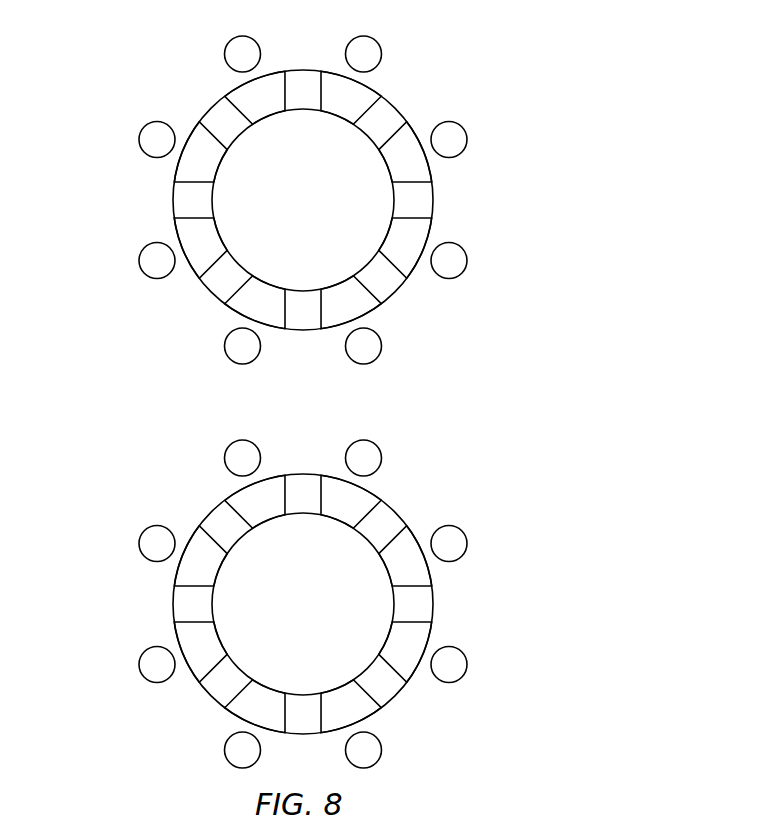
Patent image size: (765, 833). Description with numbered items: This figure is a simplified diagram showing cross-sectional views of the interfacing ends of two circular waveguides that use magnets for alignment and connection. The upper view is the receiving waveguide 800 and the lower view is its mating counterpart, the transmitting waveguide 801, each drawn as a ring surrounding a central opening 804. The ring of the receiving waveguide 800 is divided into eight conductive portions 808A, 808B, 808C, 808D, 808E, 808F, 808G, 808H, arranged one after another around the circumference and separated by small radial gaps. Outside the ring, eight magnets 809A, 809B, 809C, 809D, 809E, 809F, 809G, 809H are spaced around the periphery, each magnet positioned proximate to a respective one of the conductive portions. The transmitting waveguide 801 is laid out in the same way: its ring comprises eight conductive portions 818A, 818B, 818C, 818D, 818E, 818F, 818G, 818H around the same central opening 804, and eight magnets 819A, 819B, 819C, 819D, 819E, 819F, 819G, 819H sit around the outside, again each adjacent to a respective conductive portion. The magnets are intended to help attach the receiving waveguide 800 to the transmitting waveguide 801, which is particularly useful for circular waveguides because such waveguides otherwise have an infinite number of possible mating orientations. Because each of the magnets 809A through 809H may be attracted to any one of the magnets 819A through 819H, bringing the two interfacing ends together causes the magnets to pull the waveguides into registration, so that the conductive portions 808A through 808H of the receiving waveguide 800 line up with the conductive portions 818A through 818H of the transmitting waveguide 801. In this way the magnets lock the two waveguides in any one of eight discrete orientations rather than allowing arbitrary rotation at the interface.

The receiving waveguide 800 is at (126, 76).
The second ring assembly 801 is at (234, 585).
The central body 804 is at (323, 210).
The ring segment A 808A is at (363, 92).
The ring segment B 808B is at (417, 165).
The ring segment C 808C is at (412, 235).
The ring segment D 808D is at (360, 302).
The ring segment E 808E is at (270, 315).
The ring segment F 808F is at (200, 260).
The ring segment G 808G is at (192, 168).
The ring segment H 808H is at (250, 100).
The magnet 809A is at (365, 50).
The magnet 809B is at (455, 137).
The magnet 809C is at (453, 265).
The magnet 809D is at (367, 352).
The magnet 809E is at (240, 347).
The magnet 809F is at (152, 262).
The magnet 809G is at (153, 133).
The magnet 809H is at (242, 48).
The ring segment A 818A is at (393, 495).
The ring segment B 818B is at (444, 566).
The ring segment C 818C is at (451, 648).
The ring segment D 818D is at (384, 710).
The ring segment E 818E is at (287, 728).
The ring segment F 818F is at (172, 656).
The ring segment G 818G is at (153, 556).
The ring segment H 818H is at (230, 498).
The magnet 819A is at (403, 442).
The magnet 819B is at (493, 534).
The magnet 819C is at (496, 674).
The magnet 819D is at (408, 762).
The magnet 819E is at (206, 761).
The magnet 819F is at (111, 668).
The magnet 819G is at (116, 535).
The magnet 819H is at (204, 441).